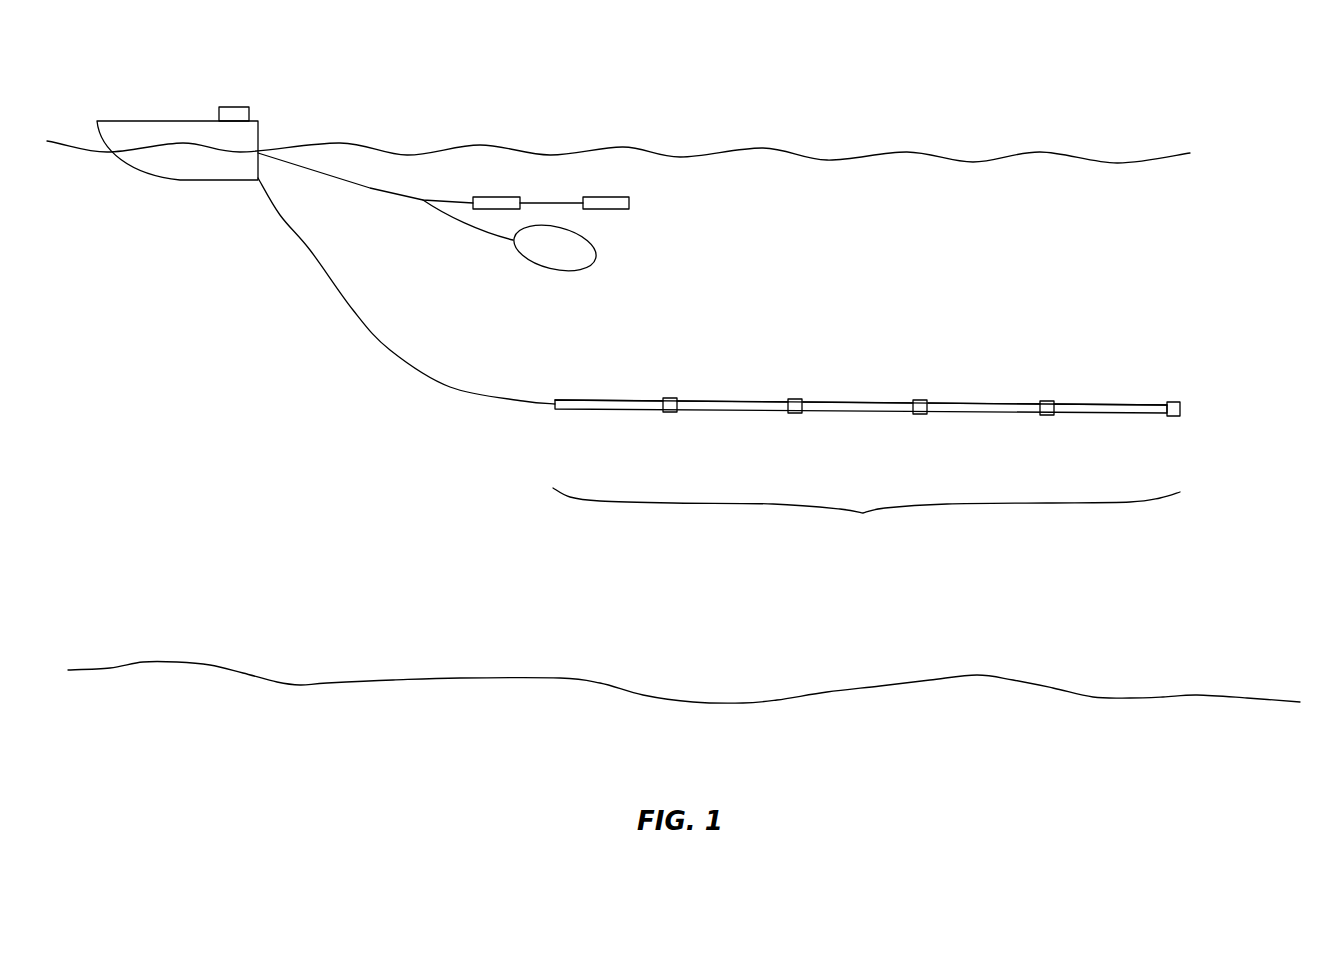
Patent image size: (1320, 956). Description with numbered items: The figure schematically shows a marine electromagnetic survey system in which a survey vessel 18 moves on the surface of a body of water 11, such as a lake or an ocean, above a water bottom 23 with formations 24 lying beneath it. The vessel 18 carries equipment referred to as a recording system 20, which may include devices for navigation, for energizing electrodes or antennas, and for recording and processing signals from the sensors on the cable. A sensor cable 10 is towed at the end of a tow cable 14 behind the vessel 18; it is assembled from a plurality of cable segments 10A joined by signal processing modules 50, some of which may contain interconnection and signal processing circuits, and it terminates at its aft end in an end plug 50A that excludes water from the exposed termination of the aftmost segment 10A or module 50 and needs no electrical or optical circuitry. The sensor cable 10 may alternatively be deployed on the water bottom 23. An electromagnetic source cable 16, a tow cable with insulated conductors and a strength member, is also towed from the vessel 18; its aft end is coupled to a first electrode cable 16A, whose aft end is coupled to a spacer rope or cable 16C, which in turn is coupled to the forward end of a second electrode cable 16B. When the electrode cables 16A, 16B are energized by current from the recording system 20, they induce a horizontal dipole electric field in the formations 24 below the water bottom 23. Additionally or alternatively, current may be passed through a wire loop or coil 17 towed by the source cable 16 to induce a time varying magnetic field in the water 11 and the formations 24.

The sensor cable 10 is at (866, 473).
The cable segment 10A is at (602, 398).
The body of water 11 is at (618, 197).
The tow cable 14 is at (377, 327).
The electromagnetic source cable 16 is at (366, 185).
The first electrode cable 16A is at (497, 197).
The second electrode cable 16B is at (606, 197).
The spacer rope or cable 16C is at (551, 203).
The wire loop or coil 17 is at (546, 268).
The survey vessel 18 is at (190, 168).
The recording system 20 is at (230, 107).
The water bottom 23 is at (302, 683).
The formations 24 is at (682, 745).
The signal processing module 50 is at (670, 413).
The end plug 50A is at (1174, 402).